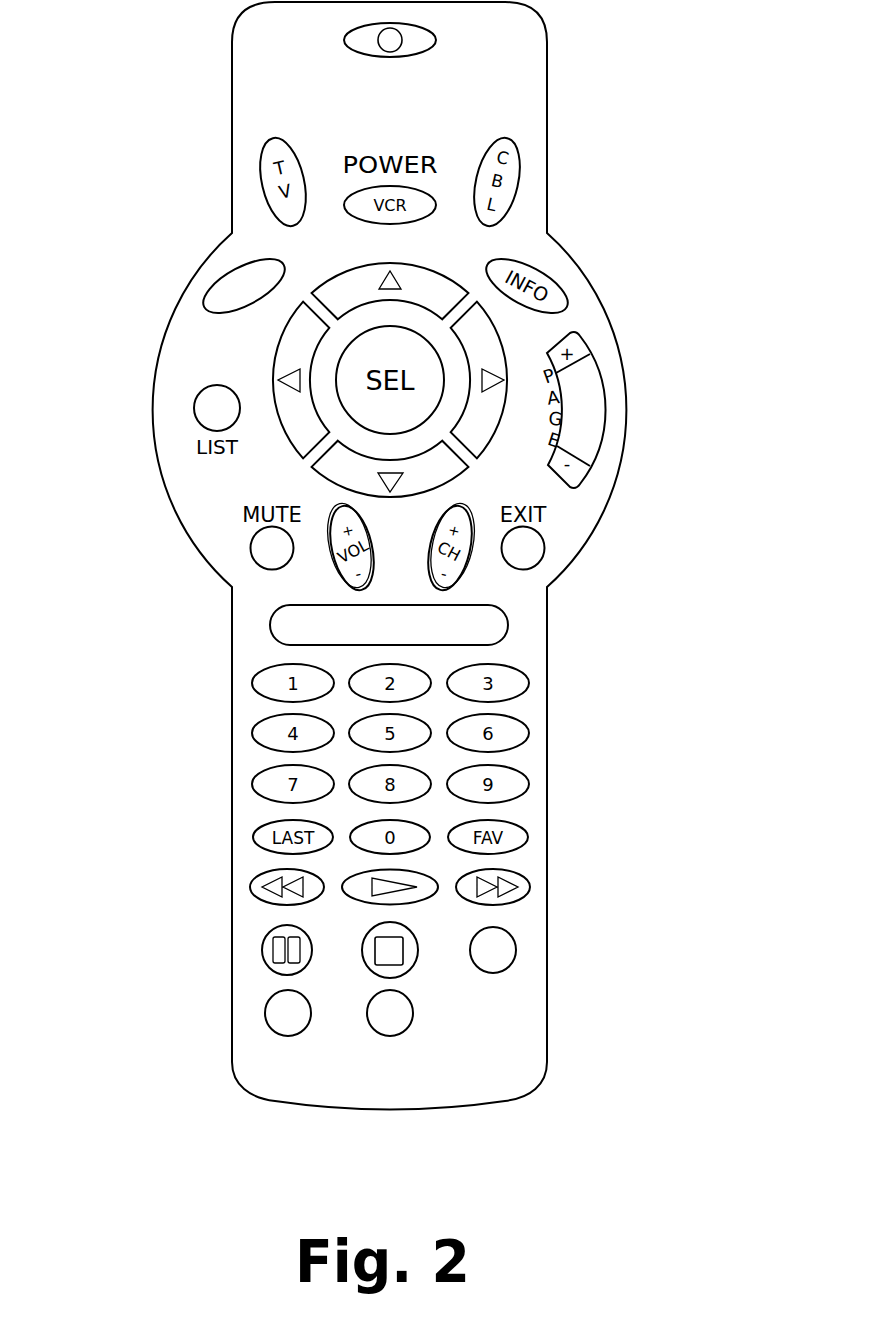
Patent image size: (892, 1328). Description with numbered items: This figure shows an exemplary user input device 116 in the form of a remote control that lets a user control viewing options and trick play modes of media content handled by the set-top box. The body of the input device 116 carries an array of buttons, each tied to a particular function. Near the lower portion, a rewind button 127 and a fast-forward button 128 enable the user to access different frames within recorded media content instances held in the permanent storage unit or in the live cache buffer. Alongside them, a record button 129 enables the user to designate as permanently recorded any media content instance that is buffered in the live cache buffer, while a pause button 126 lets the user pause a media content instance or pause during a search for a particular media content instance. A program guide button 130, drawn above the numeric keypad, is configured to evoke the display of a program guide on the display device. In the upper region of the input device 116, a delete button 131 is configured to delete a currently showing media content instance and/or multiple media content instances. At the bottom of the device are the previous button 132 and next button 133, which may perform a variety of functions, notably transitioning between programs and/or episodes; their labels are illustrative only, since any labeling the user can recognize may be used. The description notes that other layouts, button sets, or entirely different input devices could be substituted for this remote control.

The user input device 116 is at (587, 72).
The pause button 126 is at (262, 950).
The rewind button 127 is at (250, 887).
The fast-forward button 128 is at (530, 887).
The record button 129 is at (516, 950).
The program guide button 130 is at (508, 626).
The delete button 131 is at (203, 309).
The previous button 132 is at (265, 1018).
The next button 133 is at (413, 1013).